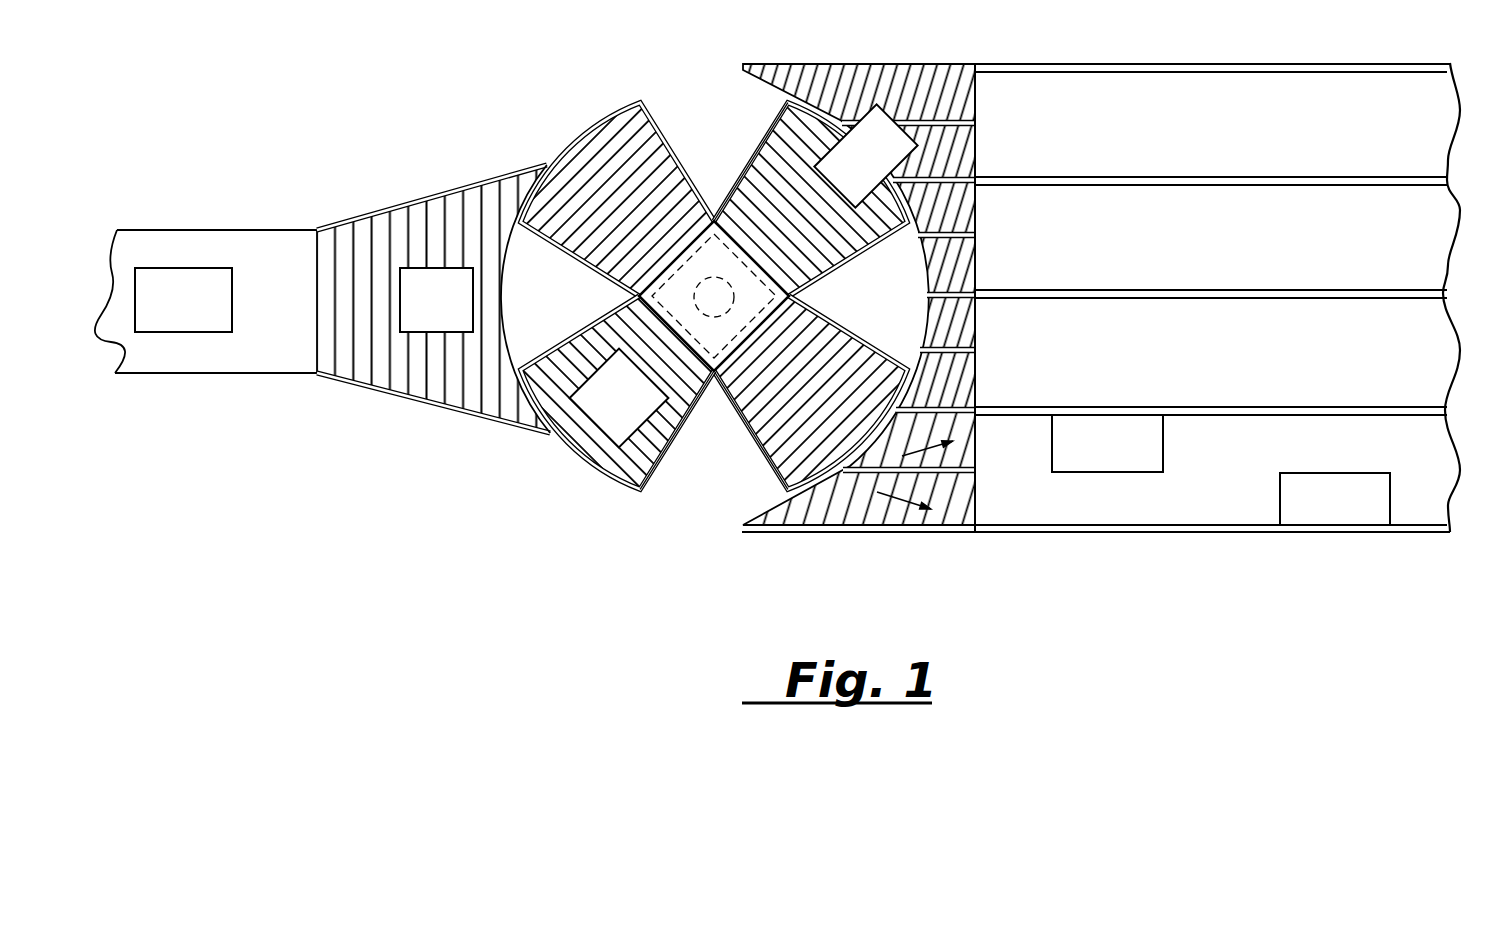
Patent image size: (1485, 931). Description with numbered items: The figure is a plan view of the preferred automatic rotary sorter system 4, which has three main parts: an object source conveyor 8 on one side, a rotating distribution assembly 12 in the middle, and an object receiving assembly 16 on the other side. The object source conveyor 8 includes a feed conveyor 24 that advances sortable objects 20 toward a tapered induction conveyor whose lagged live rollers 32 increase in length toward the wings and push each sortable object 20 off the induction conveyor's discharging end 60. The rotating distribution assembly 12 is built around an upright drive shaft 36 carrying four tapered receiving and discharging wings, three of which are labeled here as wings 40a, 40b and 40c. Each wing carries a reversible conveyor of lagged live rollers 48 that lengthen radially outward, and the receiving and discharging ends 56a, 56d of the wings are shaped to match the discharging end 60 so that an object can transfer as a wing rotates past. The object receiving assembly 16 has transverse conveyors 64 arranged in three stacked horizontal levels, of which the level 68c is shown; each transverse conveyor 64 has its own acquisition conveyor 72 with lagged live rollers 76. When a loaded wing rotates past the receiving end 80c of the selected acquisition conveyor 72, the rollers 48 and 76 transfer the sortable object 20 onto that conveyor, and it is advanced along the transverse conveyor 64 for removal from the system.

The automatic rotary sorter system 4 is at (478, 47).
The object source conveyor 8 is at (300, 210).
The rotating distribution assembly 12 is at (718, 97).
The object receiving assembly 16 is at (1068, 47).
The sortable object 20 is at (193, 322).
The feed conveyor 24 is at (231, 375).
The lagged live rollers 32 is at (470, 218).
The upright drive shaft 36 is at (672, 322).
The receiving and discharging wing 40a is at (660, 473).
The receiving and discharging wing 40b is at (735, 421).
The receiving and discharging wing 40c is at (755, 151).
The lagged live rollers 48 is at (776, 408).
The receiving and discharging end 56a is at (577, 450).
The receiving and discharging end 56d is at (598, 125).
The discharging end 60 is at (505, 330).
The transverse conveyor 64 is at (1272, 93).
The horizontal level 68c is at (1143, 532).
The acquisition conveyor 72 is at (979, 150).
The lagged live rollers 76 is at (862, 80).
The receiving end 80c is at (925, 318).